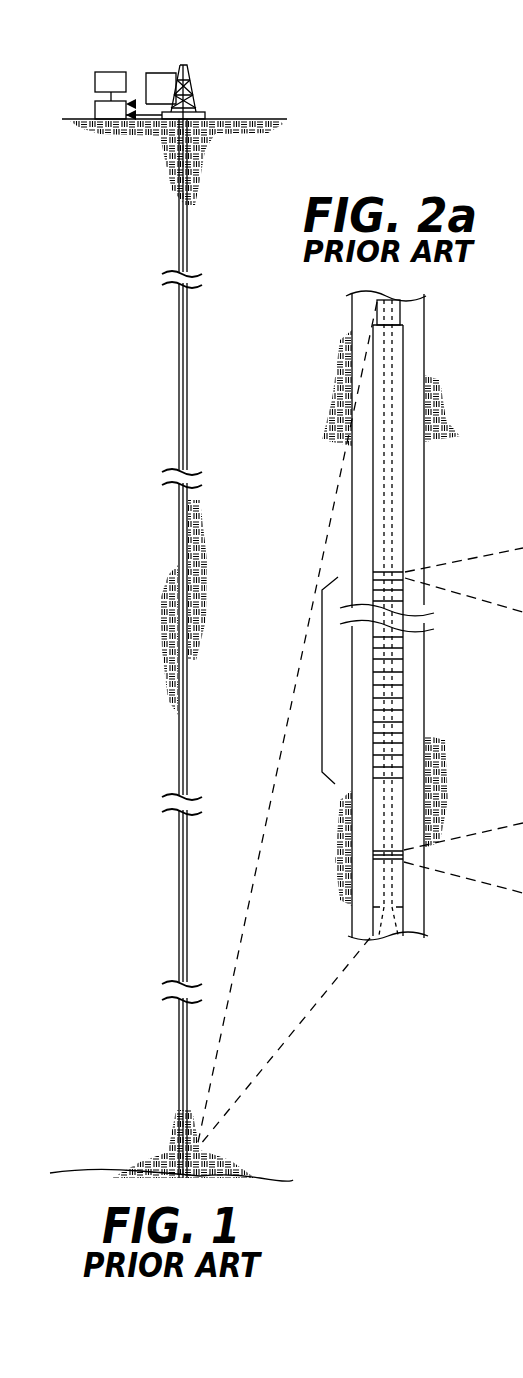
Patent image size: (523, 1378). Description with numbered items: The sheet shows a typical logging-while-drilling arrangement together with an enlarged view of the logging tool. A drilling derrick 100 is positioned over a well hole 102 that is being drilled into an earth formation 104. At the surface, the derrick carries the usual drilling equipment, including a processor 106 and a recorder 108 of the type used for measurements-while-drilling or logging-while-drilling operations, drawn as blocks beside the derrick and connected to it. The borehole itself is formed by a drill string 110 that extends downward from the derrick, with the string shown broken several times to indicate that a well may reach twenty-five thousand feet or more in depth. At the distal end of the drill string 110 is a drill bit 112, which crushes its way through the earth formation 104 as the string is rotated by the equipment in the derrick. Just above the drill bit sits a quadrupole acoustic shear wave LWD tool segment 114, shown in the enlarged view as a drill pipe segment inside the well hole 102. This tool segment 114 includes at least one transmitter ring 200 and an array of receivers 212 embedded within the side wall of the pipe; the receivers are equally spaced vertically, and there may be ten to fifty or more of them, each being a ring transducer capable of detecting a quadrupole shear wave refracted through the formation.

In FIG. 1, the drilling derrick 100 is at (197, 88).
In FIG. 1, the well hole 102 is at (177, 153).
In FIG. 2a, the well hole 102 is at (352, 325).
In FIG. 1, the earth formation 104 is at (244, 193).
In FIG. 1, the processor 106 is at (95, 110).
In FIG. 1, the recorder 108 is at (111, 72).
In FIG. 1, the drill string 110 is at (179, 390).
In FIG. 1, the drill bit 112 is at (195, 1163).
In FIG. 1, the quadrupole acoustic shear wave LWD tool segment 114 is at (186, 1150).
In FIG. 2a, the quadrupole acoustic shear wave LWD tool segment 114 is at (404, 356).
In FIG. 2a, the transmitter ring 200 is at (395, 862).
In FIG. 2a, the array of receivers 212 is at (322, 740).